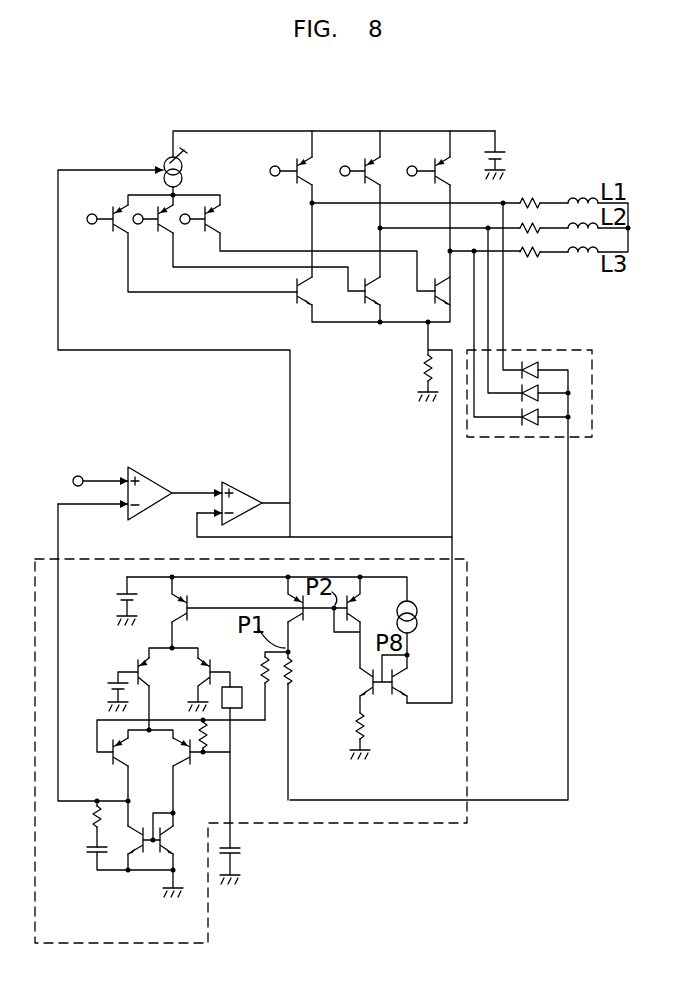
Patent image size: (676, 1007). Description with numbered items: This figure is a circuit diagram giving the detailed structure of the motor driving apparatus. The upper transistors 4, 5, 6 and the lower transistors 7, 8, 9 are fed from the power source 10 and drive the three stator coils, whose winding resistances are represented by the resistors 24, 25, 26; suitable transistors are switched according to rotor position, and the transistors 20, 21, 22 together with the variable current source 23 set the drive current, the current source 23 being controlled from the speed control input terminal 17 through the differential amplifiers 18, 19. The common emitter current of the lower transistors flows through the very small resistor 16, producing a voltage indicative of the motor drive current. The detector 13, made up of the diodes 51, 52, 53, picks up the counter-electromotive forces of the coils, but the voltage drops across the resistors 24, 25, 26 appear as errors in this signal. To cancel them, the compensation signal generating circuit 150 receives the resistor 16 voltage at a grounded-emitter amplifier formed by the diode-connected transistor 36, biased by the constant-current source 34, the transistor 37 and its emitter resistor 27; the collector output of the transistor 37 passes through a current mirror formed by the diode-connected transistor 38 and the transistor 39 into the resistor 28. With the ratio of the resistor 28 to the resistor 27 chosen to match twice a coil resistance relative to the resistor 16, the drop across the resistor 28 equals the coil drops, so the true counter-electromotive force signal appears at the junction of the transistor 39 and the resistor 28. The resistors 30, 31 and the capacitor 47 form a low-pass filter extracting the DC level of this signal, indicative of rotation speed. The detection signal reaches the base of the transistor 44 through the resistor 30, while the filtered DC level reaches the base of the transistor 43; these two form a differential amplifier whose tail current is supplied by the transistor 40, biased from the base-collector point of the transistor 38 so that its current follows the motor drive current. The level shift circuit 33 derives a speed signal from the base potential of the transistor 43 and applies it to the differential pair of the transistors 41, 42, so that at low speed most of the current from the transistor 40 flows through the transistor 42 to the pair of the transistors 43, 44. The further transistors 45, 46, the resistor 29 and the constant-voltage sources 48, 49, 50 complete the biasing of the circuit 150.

The transistor 4 is at (305, 155).
The transistor 5 is at (375, 157).
The transistor 6 is at (447, 157).
The transistor 7 is at (302, 303).
The transistor 8 is at (365, 300).
The transistor 9 is at (434, 300).
The power source 10 is at (498, 145).
The detector 13 is at (592, 383).
The resistor 16 is at (420, 367).
The speed control input terminal 17 is at (78, 476).
The differential amplifier 18 is at (157, 482).
The differential amplifier 19 is at (243, 487).
The transistor 20 is at (117, 233).
The transistor 21 is at (163, 233).
The transistor 22 is at (220, 223).
The variable current source 23 is at (165, 165).
The resistor 24 is at (535, 197).
The resistor 25 is at (542, 233).
The resistor 26 is at (535, 258).
The emitter resistor 27 is at (372, 722).
The resistor 28 is at (297, 673).
The resistor 29 is at (92, 820).
The resistor 30 is at (265, 665).
The resistor 31 is at (212, 742).
The level shift circuit 33 is at (242, 702).
The constant-current source 34 is at (407, 603).
The transistor 36 is at (402, 680).
The transistor 37 is at (367, 687).
The transistor 38 is at (350, 610).
The transistor 39 is at (295, 618).
The transistor 40 is at (193, 600).
The transistor 41 is at (205, 670).
The transistor 42 is at (138, 653).
The transistor 43 is at (180, 758).
The transistor 44 is at (123, 755).
The transistor 45 is at (172, 837).
The transistor 46 is at (133, 852).
The capacitor 47 is at (263, 850).
The constant-voltage source 48 is at (120, 598).
The constant-voltage source 49 is at (112, 687).
The constant-voltage source 50 is at (90, 852).
The diode 51 is at (527, 362).
The diode 52 is at (538, 400).
The diode 53 is at (532, 425).
The compensation signal generating circuit 150 is at (467, 597).